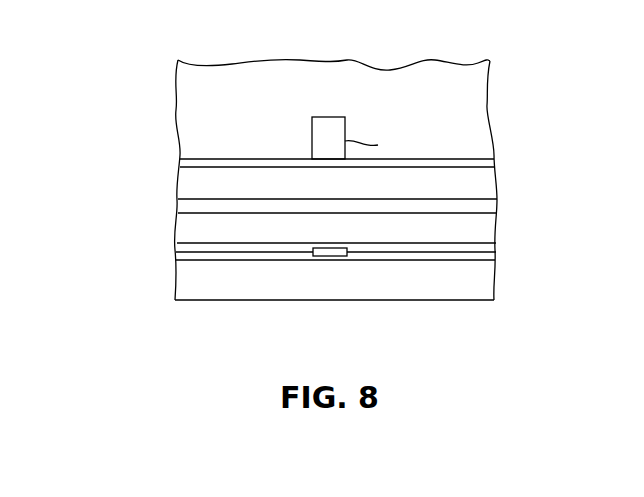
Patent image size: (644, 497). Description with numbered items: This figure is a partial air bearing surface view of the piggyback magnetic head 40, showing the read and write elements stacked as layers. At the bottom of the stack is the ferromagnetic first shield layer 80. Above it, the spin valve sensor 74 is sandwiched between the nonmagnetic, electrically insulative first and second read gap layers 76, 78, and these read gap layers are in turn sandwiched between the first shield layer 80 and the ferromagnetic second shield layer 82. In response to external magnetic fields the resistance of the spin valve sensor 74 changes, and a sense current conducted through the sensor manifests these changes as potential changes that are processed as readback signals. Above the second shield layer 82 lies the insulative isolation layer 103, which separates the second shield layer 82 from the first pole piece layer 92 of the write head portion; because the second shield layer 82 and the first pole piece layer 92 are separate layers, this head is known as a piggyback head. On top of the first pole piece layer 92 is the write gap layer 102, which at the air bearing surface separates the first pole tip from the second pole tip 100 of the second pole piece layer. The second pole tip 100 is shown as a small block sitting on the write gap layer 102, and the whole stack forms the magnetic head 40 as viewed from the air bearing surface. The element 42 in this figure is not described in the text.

The piggyback magnetic head 40 is at (510, 77).
The cap layer 42 is at (182, 90).
The second pole tip 100 is at (323, 125).
The write gap layer 102 is at (248, 159).
The first pole piece layer 92 is at (186, 185).
The insulative isolation layer 103 is at (485, 208).
The second shield layer 82 is at (183, 233).
The second read gap layer 78 is at (453, 248).
The first read gap layer 76 is at (238, 260).
The spin valve sensor 74 is at (327, 256).
The first shield layer 80 is at (485, 283).